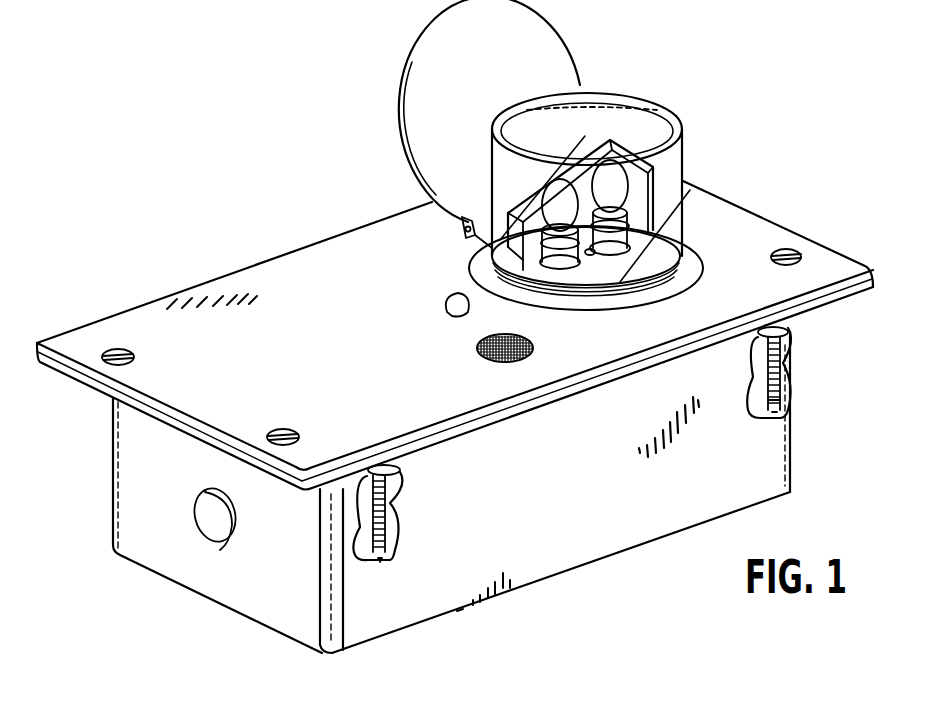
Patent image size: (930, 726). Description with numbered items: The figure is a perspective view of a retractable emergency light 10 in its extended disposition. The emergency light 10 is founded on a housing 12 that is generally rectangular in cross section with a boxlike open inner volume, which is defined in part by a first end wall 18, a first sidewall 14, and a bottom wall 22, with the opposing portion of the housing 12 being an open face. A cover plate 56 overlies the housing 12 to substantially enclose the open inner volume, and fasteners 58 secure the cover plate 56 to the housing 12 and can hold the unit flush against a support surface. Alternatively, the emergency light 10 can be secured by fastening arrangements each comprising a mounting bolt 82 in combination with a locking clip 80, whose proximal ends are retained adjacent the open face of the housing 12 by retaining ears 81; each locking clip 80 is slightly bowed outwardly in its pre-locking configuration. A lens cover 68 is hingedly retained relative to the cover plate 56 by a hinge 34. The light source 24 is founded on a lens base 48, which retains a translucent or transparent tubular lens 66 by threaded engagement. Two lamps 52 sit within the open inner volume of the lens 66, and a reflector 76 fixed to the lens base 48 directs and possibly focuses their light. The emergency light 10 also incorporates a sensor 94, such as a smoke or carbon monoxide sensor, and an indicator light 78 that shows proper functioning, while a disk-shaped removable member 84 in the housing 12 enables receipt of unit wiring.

The emergency light 10 is at (240, 129).
The housing 12 is at (566, 556).
The first sidewall 14 is at (413, 600).
The first end wall 18 is at (158, 553).
The bottom wall 22 is at (652, 540).
The light source 24 is at (686, 109).
The hinge 34 is at (462, 230).
The lens base 48 is at (578, 282).
The lamps 52 is at (622, 148).
The cover plate 56 is at (283, 272).
The fasteners 58 is at (118, 350).
The lens 66 is at (621, 100).
The lens cover 68 is at (403, 112).
The reflector 76 is at (600, 144).
The indicator light 78 is at (446, 300).
The locking clip 80 is at (797, 360).
The retaining ears 81 is at (800, 327).
The mounting bolt 82 is at (782, 393).
The removable member 84 is at (216, 527).
The sensor 94 is at (477, 348).